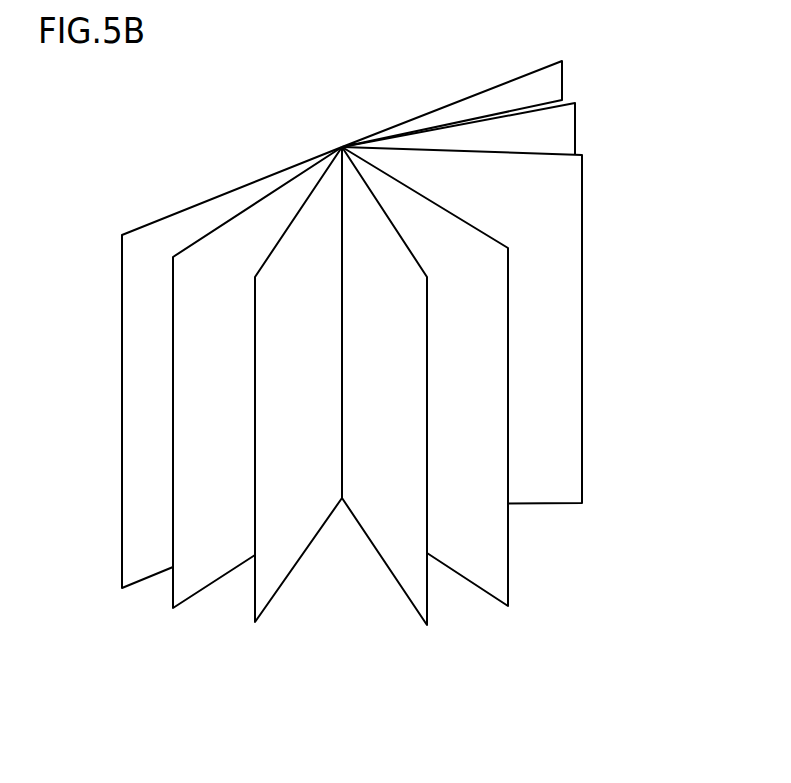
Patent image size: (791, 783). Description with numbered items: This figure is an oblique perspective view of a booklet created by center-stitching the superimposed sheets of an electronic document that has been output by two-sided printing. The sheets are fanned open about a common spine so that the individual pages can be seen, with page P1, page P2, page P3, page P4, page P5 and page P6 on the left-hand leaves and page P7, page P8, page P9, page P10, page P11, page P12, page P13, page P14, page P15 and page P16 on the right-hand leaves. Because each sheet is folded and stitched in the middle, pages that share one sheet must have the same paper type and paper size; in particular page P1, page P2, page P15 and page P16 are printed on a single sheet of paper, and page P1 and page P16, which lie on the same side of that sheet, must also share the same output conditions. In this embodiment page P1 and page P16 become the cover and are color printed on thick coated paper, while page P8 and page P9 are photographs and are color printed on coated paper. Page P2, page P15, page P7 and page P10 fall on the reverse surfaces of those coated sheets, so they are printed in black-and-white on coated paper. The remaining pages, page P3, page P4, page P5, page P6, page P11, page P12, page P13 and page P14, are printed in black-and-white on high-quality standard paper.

The page P1 is at (192, 380).
The page P2 is at (232, 367).
The page P3 is at (224, 401).
The page P4 is at (257, 377).
The page P5 is at (273, 413).
The page P6 is at (298, 384).
The page P7 is at (384, 386).
The page P8 is at (414, 422).
The page P9 is at (425, 376).
The page P10 is at (472, 402).
The page P11 is at (462, 325).
The page P12 is at (518, 342).
The page P13 is at (458, 129).
The page P14 is at (513, 119).
The page P15 is at (452, 104).
The page P16 is at (496, 74).